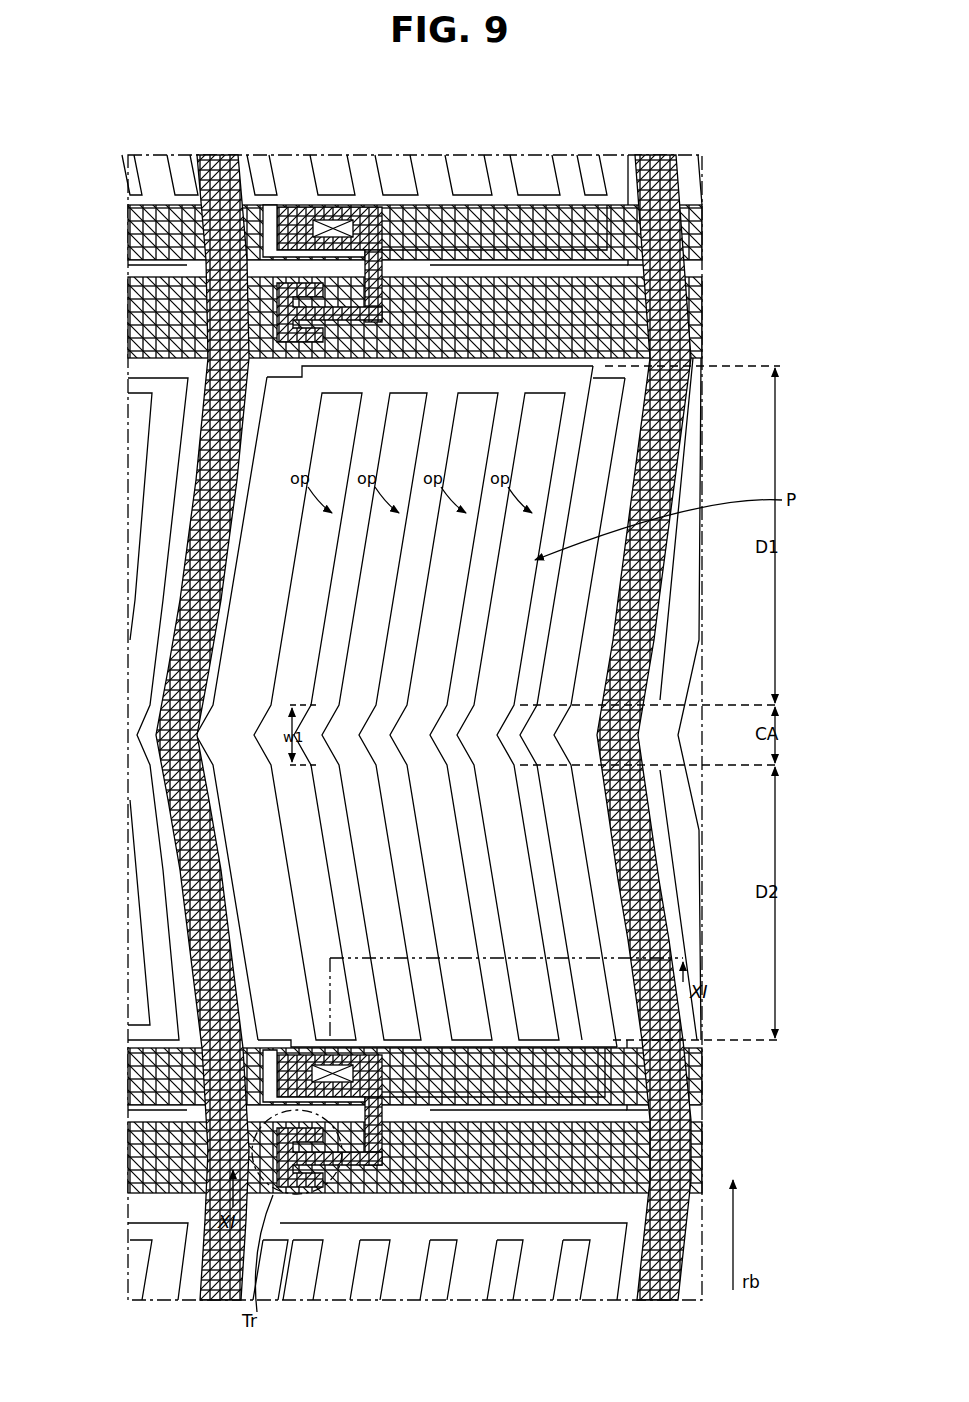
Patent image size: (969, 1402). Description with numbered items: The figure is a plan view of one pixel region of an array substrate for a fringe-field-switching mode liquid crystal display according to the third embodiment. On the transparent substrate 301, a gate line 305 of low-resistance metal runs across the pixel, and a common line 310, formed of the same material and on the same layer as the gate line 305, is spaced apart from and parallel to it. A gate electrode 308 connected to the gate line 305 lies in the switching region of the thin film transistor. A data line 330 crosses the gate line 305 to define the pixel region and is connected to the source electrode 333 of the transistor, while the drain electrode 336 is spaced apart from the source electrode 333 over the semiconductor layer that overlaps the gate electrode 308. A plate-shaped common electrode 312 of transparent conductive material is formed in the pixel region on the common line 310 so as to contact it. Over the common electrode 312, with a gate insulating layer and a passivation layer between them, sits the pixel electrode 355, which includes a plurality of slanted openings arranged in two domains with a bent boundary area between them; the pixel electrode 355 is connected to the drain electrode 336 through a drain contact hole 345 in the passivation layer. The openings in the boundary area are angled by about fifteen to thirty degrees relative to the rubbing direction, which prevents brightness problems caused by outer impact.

The substrate 301 is at (658, 140).
The gate line 305 is at (545, 1180).
The gate electrode 308 is at (300, 1180).
The common line 310 is at (627, 1130).
The common electrode 312 is at (246, 965).
The data line 330 is at (190, 604).
The source electrode 333 is at (300, 1183).
The drain electrode 336 is at (338, 1170).
The drain contact hole 345 is at (342, 1062).
The pixel electrode 355 is at (246, 480).